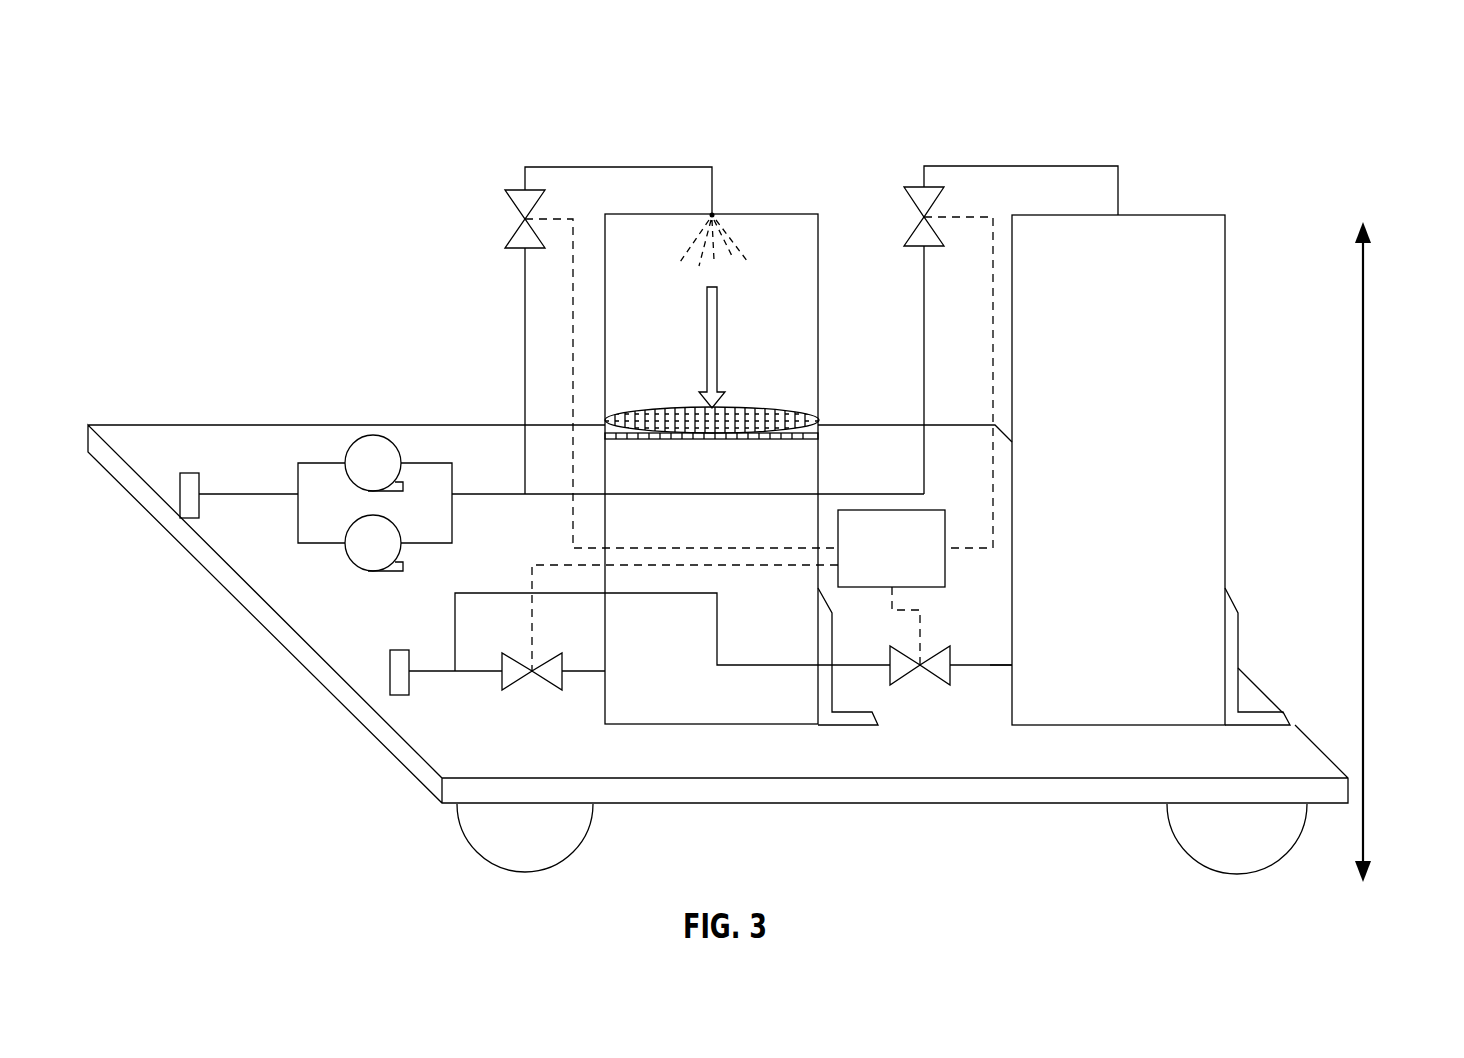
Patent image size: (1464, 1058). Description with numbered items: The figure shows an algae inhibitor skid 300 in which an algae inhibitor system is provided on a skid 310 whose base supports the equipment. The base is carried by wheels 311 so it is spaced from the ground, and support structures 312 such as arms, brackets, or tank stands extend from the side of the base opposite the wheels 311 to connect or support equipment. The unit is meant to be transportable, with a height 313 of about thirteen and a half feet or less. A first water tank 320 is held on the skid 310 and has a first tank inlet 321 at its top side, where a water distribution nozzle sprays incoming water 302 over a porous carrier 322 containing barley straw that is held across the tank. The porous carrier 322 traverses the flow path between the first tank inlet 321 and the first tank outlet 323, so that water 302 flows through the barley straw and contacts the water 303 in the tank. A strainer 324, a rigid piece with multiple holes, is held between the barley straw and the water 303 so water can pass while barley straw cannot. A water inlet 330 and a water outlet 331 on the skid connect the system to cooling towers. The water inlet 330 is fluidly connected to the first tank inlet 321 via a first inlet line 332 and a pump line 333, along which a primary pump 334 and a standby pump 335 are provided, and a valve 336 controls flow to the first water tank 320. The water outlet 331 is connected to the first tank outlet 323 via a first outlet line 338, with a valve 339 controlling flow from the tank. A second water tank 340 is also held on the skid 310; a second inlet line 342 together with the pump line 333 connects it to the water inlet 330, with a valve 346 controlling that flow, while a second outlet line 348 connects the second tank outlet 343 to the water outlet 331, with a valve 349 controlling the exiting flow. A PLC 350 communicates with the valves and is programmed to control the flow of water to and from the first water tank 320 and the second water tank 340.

The algae inhibitor skid 300 is at (1362, 98).
The water 302 is at (720, 310).
The water 303 is at (670, 536).
The skid 310 is at (150, 424).
The wheels 311 is at (468, 842).
The support structures 312 is at (840, 718).
The height 313 is at (1365, 312).
The first water tank 320 is at (668, 724).
The first tank inlet 321 is at (714, 212).
The porous carrier 322 is at (760, 412).
The first tank outlet 323 is at (620, 671).
The strainer 324 is at (783, 441).
The water inlet 330 is at (178, 502).
The water outlet 331 is at (390, 672).
The first inlet line 332 is at (592, 167).
The pump line 333 is at (243, 494).
The primary pump 334 is at (347, 462).
The standby pump 335 is at (348, 562).
The valve 336 is at (518, 232).
The first outlet line 338 is at (470, 672).
The valve 339 is at (515, 683).
The second water tank 340 is at (1075, 725).
The second inlet line 342 is at (1030, 166).
The second tank outlet 343 is at (1013, 667).
The valve 346 is at (910, 186).
The second outlet line 348 is at (985, 668).
The valve 349 is at (927, 680).
The PLC 350 is at (913, 564).